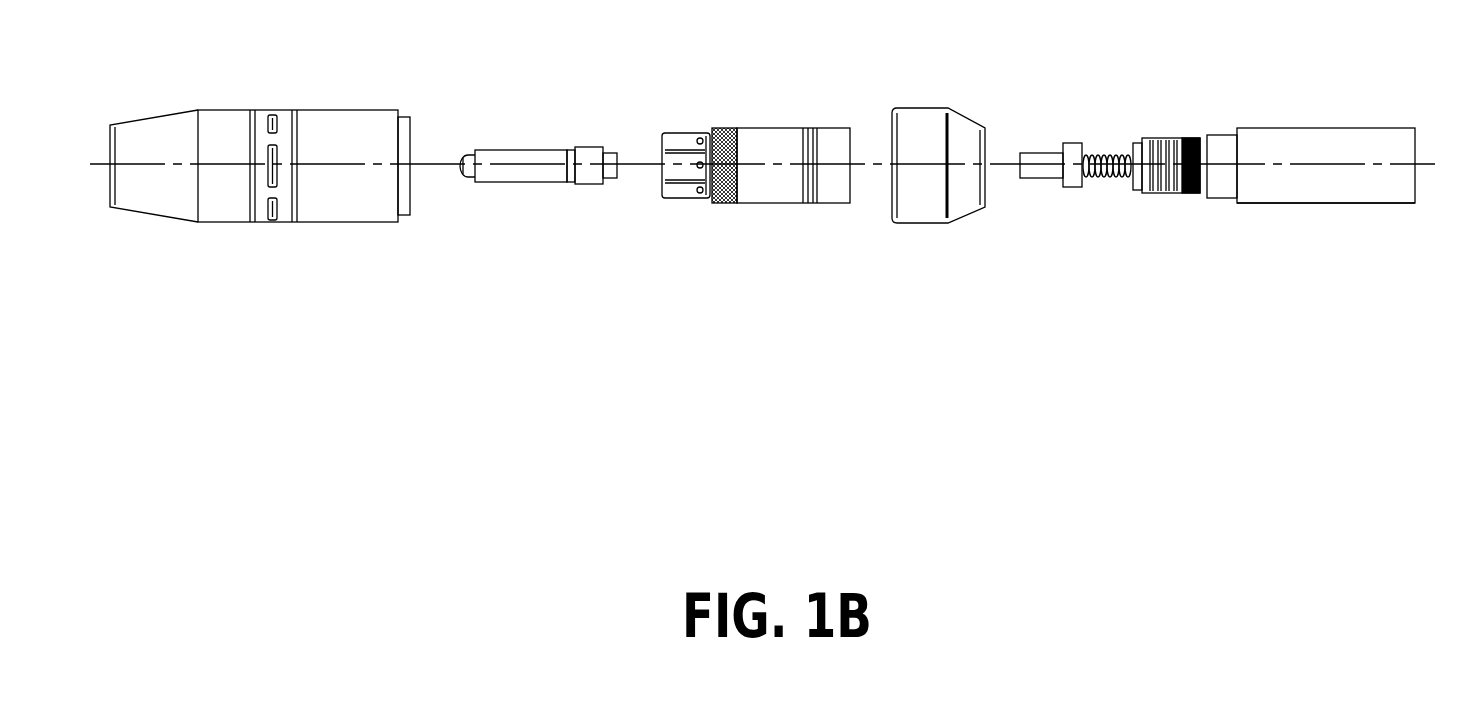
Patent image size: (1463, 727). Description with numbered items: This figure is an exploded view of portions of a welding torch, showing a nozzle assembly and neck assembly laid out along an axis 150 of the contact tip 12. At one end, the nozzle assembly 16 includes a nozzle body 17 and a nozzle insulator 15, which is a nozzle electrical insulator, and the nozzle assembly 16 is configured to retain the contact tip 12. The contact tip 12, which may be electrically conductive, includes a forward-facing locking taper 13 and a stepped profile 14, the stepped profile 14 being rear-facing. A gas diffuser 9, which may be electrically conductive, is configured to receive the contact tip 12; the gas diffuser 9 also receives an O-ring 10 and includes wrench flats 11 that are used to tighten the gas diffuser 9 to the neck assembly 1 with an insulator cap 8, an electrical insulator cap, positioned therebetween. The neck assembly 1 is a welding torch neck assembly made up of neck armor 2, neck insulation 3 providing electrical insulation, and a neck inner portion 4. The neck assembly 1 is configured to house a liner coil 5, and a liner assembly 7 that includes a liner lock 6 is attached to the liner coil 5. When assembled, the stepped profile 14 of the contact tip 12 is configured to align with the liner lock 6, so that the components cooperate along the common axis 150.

The neck assembly 1 is at (1326, 140).
The neck armor 2 is at (1326, 230).
The neck insulation 3 is at (1251, 136).
The neck inner portion 4 is at (1174, 194).
The liner coil 5 is at (1124, 133).
The liner lock 6 is at (1069, 211).
The liner assembly 7 is at (1073, 122).
The insulator cap 8 is at (947, 194).
The gas diffuser 9 is at (806, 127).
The O-ring 10 is at (845, 201).
The wrench flats 11 is at (707, 130).
The contact tip 12 is at (516, 204).
The forward-facing locking taper 13 is at (542, 133).
The stepped profile 14 is at (651, 205).
The nozzle insulator 15 is at (436, 125).
The nozzle assembly 16 is at (298, 129).
The nozzle body 17 is at (215, 199).
The axis 150 is at (1423, 168).